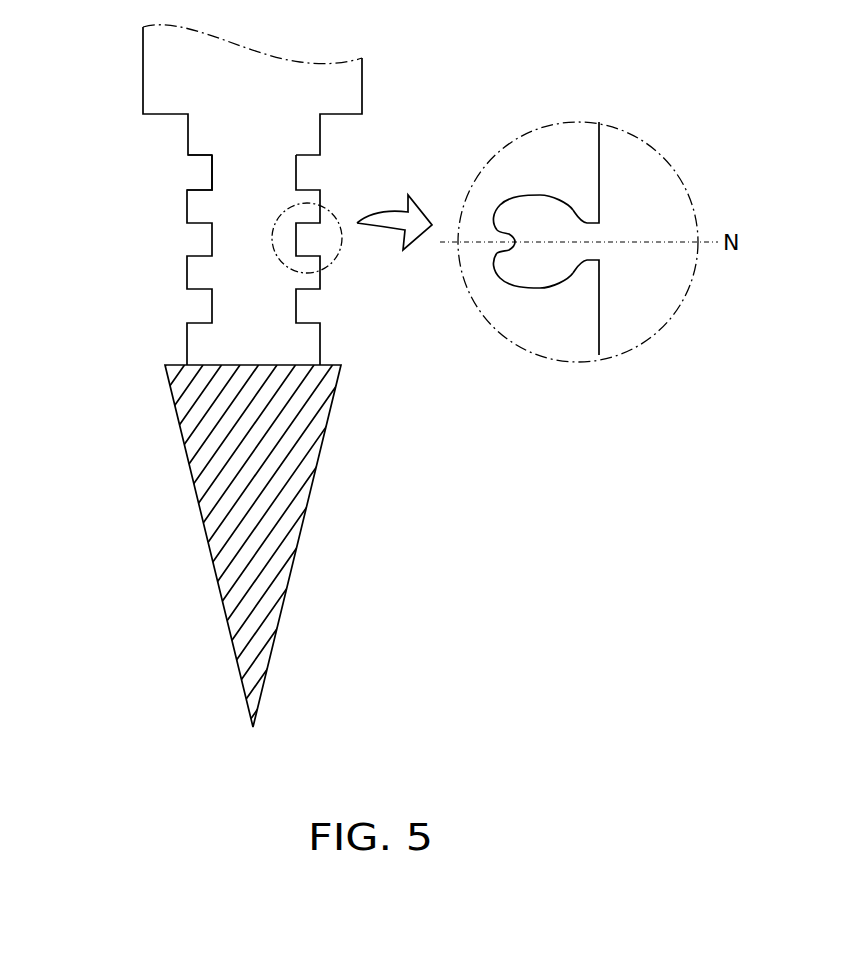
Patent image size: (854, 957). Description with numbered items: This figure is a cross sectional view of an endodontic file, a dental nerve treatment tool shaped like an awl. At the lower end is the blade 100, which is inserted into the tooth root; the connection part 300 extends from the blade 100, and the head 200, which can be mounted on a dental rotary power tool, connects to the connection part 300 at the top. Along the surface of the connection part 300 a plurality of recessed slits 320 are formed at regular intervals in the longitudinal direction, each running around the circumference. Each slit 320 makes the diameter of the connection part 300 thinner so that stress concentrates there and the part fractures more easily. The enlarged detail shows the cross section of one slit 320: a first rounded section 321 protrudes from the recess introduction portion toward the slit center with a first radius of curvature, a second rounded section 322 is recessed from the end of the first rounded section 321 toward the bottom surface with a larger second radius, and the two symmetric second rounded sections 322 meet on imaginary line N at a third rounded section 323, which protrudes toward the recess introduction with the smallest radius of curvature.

The blade 100 is at (210, 497).
The head 200 is at (160, 84).
The connection part 300 is at (201, 260).
The slit 320 is at (197, 175).
The first rounded section 321 is at (593, 221).
The second rounded section 322 is at (540, 194).
The third rounded section 323 is at (502, 233).